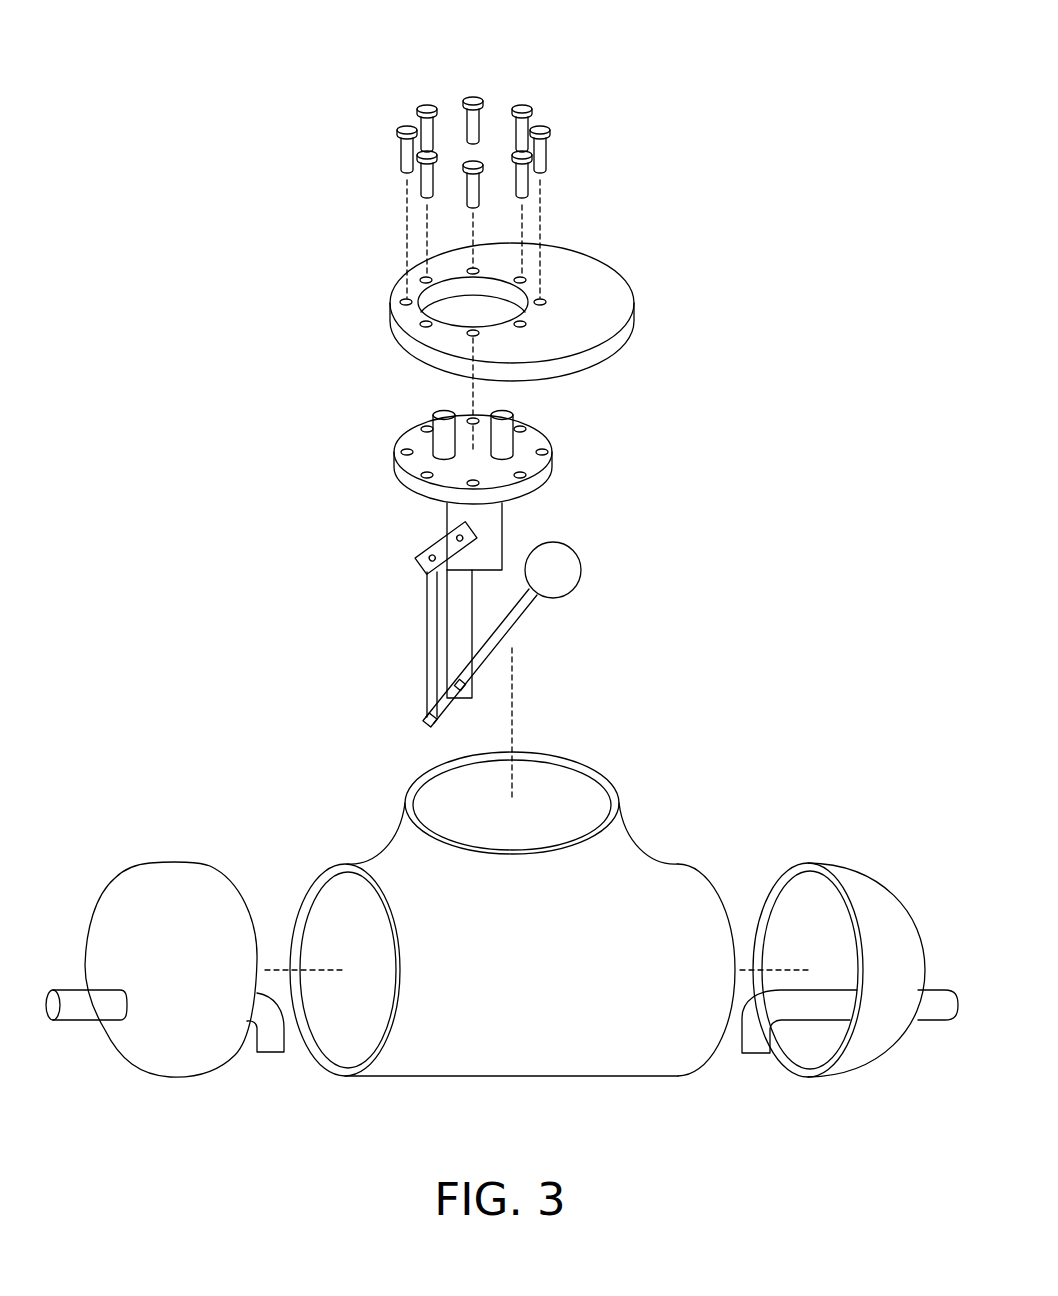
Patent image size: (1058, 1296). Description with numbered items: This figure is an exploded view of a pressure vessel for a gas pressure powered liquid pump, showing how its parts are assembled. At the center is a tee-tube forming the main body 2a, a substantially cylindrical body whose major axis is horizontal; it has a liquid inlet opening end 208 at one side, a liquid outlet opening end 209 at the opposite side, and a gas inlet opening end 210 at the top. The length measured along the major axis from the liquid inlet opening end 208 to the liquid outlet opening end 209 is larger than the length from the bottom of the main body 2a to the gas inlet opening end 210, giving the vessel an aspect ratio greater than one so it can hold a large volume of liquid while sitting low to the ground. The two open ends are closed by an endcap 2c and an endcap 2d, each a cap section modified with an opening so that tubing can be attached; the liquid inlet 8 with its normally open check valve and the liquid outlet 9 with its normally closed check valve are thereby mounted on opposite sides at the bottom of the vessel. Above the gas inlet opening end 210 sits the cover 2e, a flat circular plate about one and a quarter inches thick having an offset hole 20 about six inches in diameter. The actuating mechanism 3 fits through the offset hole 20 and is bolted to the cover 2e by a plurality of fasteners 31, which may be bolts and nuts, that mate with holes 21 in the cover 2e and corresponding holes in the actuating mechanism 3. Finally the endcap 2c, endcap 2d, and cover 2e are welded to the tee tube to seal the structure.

The fasteners 31 is at (522, 100).
The cover 2e is at (606, 266).
The holes 21 is at (402, 302).
The offset hole 20 is at (450, 323).
The actuating mechanism 3 is at (354, 476).
The gas inlet opening end 210 is at (604, 782).
The main body 2a is at (555, 1077).
The liquid inlet opening end 208 is at (328, 1070).
The liquid outlet opening end 209 is at (703, 1067).
The endcap 2c is at (166, 862).
The endcap 2d is at (873, 870).
The liquid inlet 8 is at (78, 1021).
The liquid outlet 9 is at (933, 1022).